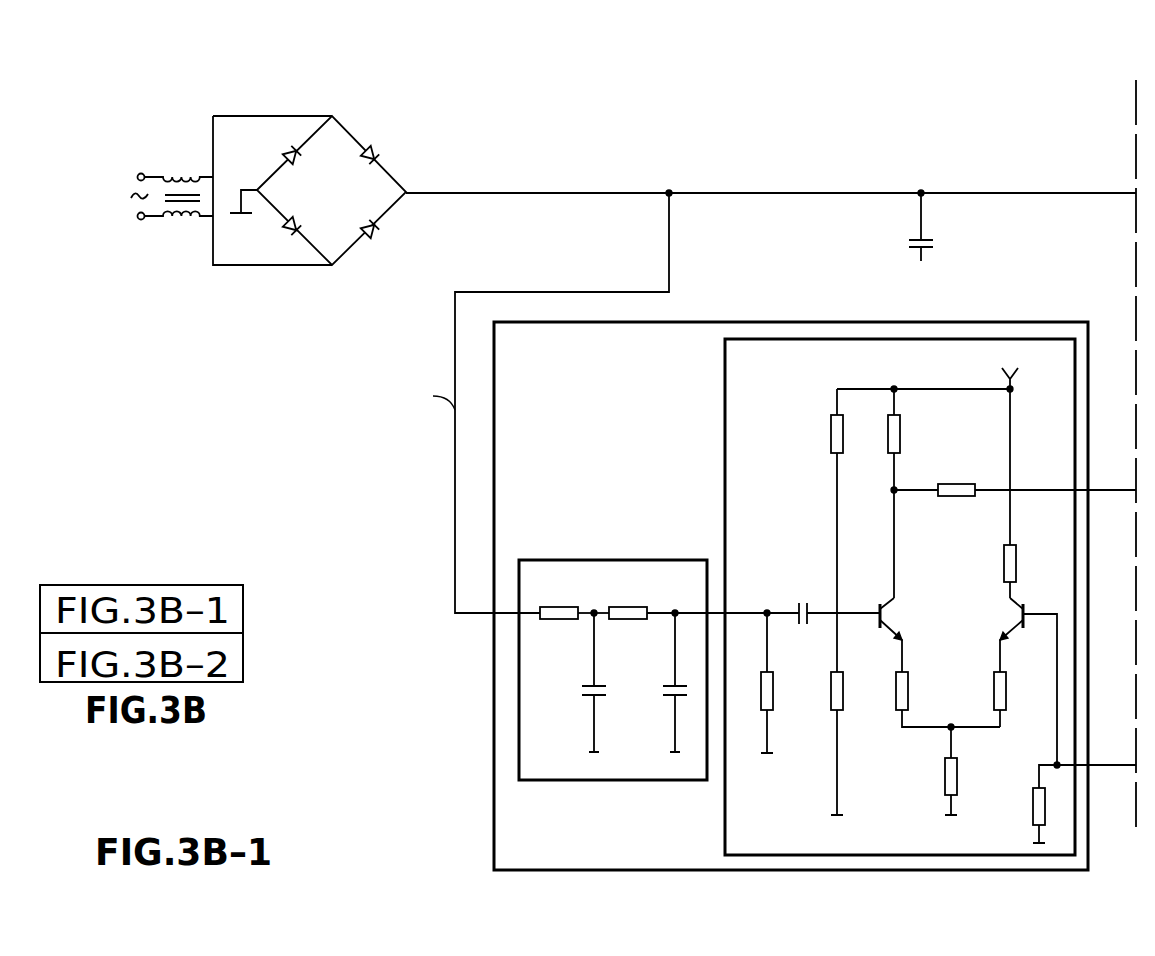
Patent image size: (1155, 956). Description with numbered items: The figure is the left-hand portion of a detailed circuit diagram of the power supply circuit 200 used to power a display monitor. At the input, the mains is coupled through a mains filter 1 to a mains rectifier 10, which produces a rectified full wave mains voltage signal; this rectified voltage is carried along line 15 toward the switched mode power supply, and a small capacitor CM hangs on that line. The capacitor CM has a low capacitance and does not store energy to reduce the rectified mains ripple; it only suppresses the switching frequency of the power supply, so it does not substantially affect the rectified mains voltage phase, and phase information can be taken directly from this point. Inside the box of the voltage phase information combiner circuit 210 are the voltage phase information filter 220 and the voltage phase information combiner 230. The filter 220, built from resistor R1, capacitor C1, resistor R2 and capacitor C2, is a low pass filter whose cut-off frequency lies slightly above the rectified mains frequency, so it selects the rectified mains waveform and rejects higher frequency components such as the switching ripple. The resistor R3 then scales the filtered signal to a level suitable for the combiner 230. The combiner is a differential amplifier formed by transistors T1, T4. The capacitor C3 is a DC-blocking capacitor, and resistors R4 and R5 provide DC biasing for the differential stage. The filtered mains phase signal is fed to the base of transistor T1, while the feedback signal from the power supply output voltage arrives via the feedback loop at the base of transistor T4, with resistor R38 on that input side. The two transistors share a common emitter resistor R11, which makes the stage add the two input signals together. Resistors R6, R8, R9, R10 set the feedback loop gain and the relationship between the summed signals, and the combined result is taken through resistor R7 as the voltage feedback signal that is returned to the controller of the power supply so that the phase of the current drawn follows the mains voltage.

The power supply circuit 200 is at (140, 128).
The mains filter 1 is at (180, 213).
The mains rectifier 10 is at (345, 123).
The line 15 is at (1050, 193).
The voltage phase information combiner circuit 210 is at (493, 665).
The VPI filter 220 is at (615, 559).
The VPI combiner 230 is at (725, 362).
The capacitor CM is at (899, 227).
The resistor R1 is at (559, 599).
The resistor R2 is at (628, 599).
The capacitor C1 is at (579, 682).
The capacitor C2 is at (659, 682).
The DC-blocking capacitor C3 is at (823, 599).
The resistor R3 is at (783, 683).
The resistor R4 is at (820, 530).
The resistor R5 is at (853, 743).
The resistor R6 is at (912, 493).
The resistor R7 is at (1015, 475).
The resistor R8 is at (1027, 493).
The resistor R9 is at (948, 699).
The resistor R10 is at (1024, 699).
The common emitter resistor R11 is at (931, 771).
The resistor R38 is at (1061, 804).
The transistor T1 is at (905, 631).
The transistor T4 is at (1029, 678).